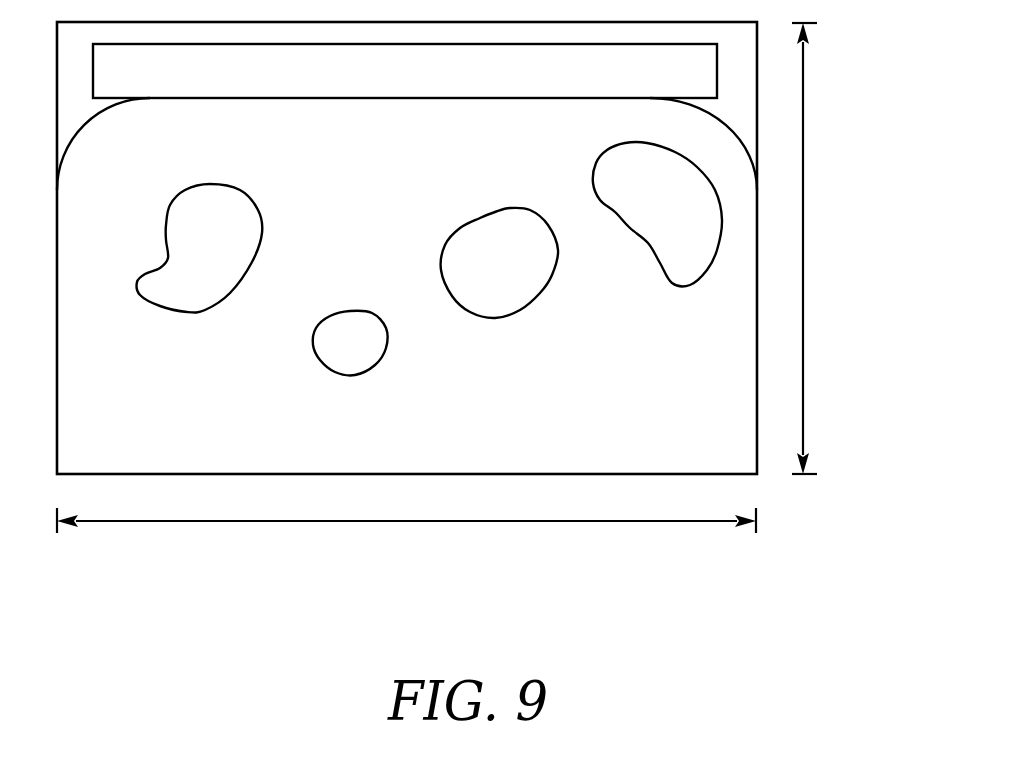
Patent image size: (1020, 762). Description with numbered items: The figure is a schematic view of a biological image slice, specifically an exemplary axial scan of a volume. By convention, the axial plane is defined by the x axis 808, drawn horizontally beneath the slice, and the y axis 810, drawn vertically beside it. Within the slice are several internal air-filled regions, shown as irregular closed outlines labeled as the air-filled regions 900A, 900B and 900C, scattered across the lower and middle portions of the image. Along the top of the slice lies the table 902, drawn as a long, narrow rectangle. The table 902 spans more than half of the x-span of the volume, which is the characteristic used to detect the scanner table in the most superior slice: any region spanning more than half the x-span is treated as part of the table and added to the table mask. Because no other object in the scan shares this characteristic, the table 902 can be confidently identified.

The table 902 is at (367, 85).
The internal air-filled region 900A is at (183, 313).
The internal air-filled region 900B is at (355, 377).
The internal air-filled region 900C is at (497, 320).
The x axis 808 is at (547, 560).
The y axis 810 is at (818, 190).